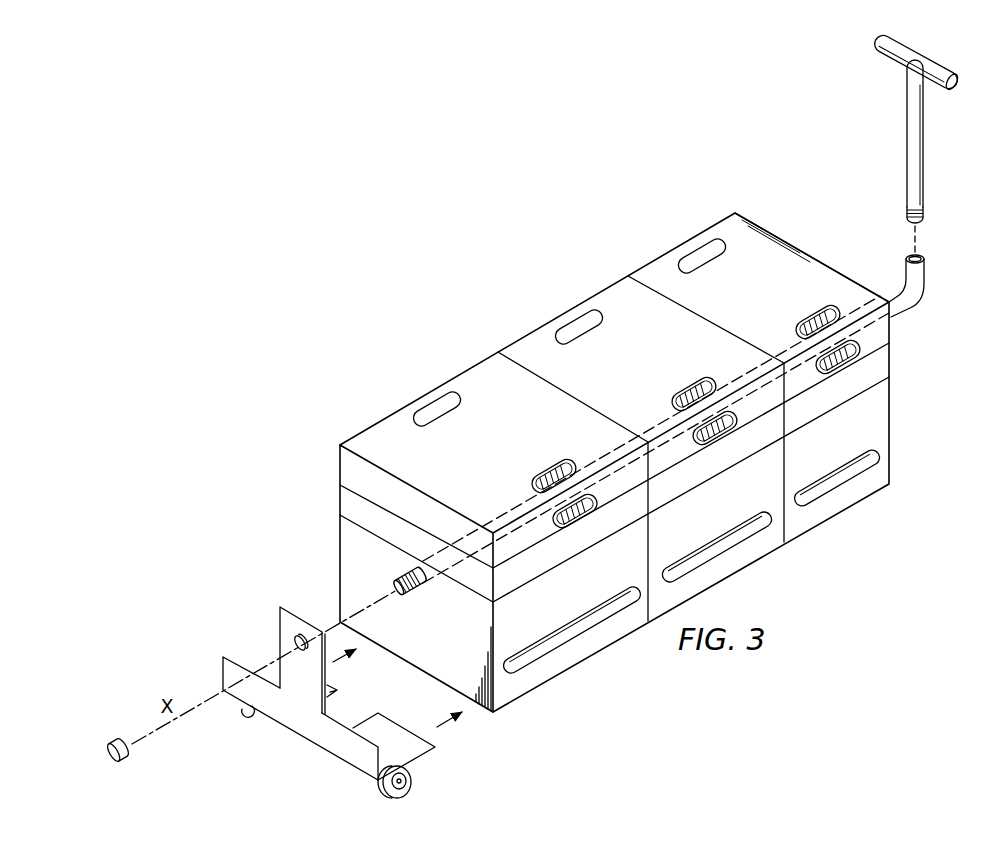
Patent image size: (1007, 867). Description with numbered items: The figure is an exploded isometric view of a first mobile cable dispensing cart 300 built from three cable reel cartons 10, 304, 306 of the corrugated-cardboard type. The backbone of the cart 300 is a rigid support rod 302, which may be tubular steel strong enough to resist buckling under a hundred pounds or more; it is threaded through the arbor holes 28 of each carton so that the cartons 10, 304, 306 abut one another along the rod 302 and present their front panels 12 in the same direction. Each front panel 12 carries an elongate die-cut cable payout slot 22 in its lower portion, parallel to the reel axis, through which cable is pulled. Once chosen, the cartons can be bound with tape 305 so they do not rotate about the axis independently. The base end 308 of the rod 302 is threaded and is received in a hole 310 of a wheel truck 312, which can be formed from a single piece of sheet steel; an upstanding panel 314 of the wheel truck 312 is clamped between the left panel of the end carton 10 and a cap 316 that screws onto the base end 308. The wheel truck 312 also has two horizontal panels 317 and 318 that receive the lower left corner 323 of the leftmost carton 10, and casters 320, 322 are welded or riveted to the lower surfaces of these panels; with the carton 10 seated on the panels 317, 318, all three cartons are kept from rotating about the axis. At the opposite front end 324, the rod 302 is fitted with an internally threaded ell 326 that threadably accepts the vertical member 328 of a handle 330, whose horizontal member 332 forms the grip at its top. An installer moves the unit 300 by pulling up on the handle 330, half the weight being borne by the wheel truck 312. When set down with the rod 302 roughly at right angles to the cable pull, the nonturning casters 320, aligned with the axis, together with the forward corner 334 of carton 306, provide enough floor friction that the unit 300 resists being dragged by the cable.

The cart 300 is at (542, 194).
The cable reel carton 10 is at (414, 391).
The carton 304 is at (560, 310).
The carton 306 is at (681, 240).
The tape 305 is at (346, 493).
The front panel 12 is at (562, 600).
The cable payout slot 22 is at (576, 630).
The support rod 302 is at (899, 313).
The base end 308 is at (407, 590).
The arbor hole 28 is at (424, 585).
The lower left corner 323 is at (497, 717).
The forward corner 334 is at (891, 484).
The upstanding panel 314 is at (300, 607).
The hole 310 is at (294, 642).
The wheel truck 312 is at (300, 753).
The horizontal panel 317 is at (400, 737).
The horizontal panel 318 is at (342, 690).
The caster 320 is at (411, 781).
The caster 322 is at (248, 716).
The cap 316 is at (113, 741).
The front end 324 is at (925, 291).
The ell 326 is at (905, 266).
The vertical member 328 is at (906, 165).
The handle 330 is at (920, 139).
The horizontal member 332 is at (938, 70).